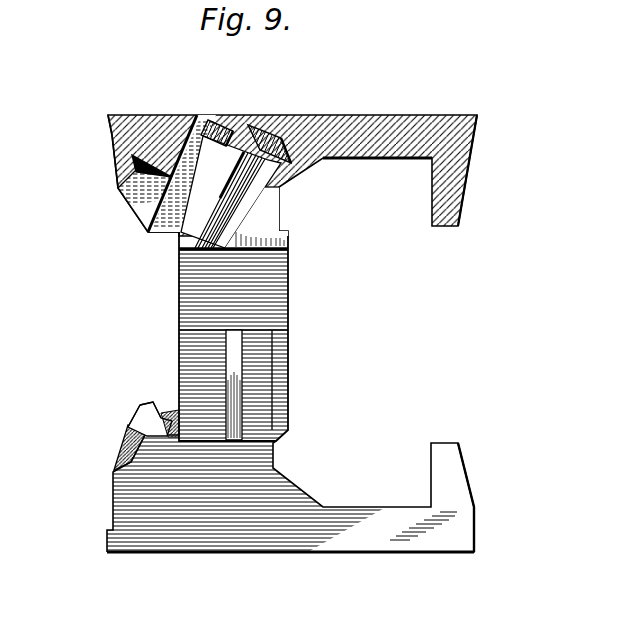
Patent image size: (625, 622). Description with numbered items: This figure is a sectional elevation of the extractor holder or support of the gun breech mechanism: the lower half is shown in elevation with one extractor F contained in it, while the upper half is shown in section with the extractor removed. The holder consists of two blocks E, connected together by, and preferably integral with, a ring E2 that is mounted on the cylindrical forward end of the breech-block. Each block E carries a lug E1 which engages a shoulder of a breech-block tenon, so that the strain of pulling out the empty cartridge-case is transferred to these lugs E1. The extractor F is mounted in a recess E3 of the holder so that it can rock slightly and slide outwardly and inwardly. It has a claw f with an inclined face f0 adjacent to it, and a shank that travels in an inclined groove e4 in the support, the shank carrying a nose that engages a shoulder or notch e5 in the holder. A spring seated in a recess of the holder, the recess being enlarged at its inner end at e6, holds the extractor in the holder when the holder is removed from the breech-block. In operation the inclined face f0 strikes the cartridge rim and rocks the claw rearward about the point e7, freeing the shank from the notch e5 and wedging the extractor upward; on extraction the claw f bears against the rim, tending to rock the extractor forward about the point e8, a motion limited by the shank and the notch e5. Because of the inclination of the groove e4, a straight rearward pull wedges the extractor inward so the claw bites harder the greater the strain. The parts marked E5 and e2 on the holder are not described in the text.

The block E is at (396, 122).
The lug E1 is at (462, 168).
The ring E2 is at (195, 348).
The recess E3 is at (114, 471).
The projection of bracket top E5 is at (143, 193).
The extractor F is at (140, 413).
The claw f is at (151, 403).
The inclined face f0 is at (131, 420).
The slot in sleeve e2 is at (241, 324).
The inclined groove e4 is at (226, 121).
The shoulder or notch e5 is at (241, 136).
The enlarged inner end of spring recess e6 is at (282, 151).
The rocking point e7 is at (210, 135).
The rocking point e8 is at (173, 172).